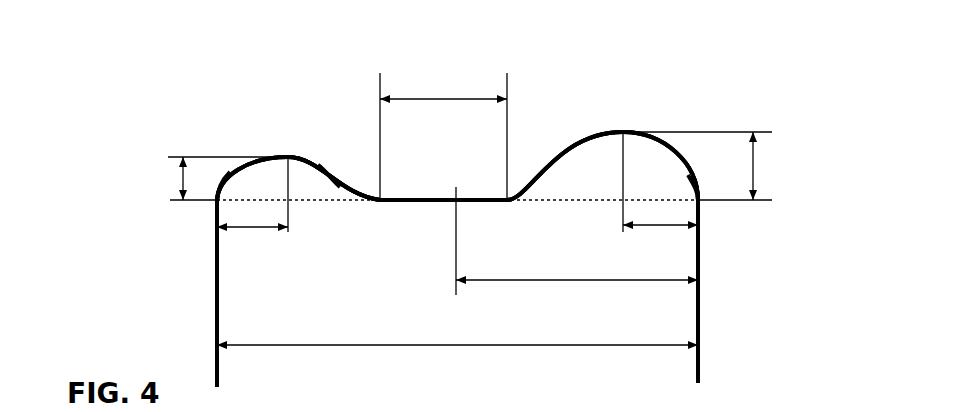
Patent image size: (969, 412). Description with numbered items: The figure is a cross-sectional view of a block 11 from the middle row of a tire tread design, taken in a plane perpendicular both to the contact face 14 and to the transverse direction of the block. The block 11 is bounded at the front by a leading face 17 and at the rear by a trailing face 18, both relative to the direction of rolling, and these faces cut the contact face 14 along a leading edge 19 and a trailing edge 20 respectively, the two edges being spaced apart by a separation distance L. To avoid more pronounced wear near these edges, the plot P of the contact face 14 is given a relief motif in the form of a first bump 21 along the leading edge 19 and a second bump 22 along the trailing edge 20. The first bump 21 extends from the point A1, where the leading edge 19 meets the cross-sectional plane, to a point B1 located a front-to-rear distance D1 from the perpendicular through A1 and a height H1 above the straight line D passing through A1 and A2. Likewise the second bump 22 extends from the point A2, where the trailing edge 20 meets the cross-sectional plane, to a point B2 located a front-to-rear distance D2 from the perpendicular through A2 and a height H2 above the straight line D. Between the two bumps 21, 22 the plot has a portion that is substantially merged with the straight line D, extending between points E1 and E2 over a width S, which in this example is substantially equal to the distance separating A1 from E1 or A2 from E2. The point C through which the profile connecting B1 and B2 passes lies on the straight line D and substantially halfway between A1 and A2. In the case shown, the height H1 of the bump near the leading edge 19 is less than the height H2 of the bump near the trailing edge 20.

The block 11 is at (155, 106).
The contact face 14 is at (558, 157).
The leading face 17 is at (217, 307).
The trailing face 18 is at (698, 302).
The leading edge 19 is at (217, 200).
The trailing edge 20 is at (698, 200).
The first bump 21 is at (267, 177).
The second bump 22 is at (643, 152).
The point A1 is at (217, 200).
The point A2 is at (698, 200).
The point B1 is at (288, 157).
The point B2 is at (623, 132).
The point E1 is at (380, 200).
The point E2 is at (507, 200).
The point C is at (456, 187).
The plot of the contact face P is at (330, 175).
The straight line D is at (312, 200).
The width S is at (443, 83).
The height H1 is at (208, 178).
The height H2 is at (694, 166).
The front-to-rear distance D1 is at (252, 247).
The front-to-rear distance D2 is at (660, 240).
The separation distance L is at (457, 333).